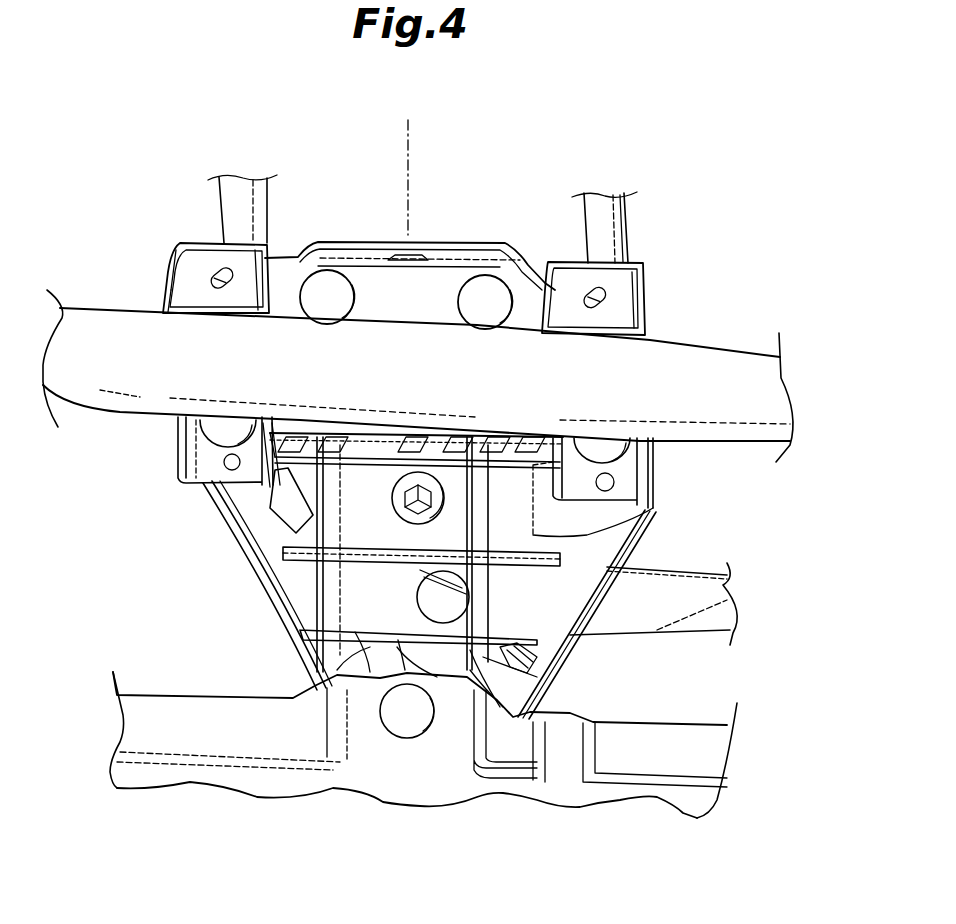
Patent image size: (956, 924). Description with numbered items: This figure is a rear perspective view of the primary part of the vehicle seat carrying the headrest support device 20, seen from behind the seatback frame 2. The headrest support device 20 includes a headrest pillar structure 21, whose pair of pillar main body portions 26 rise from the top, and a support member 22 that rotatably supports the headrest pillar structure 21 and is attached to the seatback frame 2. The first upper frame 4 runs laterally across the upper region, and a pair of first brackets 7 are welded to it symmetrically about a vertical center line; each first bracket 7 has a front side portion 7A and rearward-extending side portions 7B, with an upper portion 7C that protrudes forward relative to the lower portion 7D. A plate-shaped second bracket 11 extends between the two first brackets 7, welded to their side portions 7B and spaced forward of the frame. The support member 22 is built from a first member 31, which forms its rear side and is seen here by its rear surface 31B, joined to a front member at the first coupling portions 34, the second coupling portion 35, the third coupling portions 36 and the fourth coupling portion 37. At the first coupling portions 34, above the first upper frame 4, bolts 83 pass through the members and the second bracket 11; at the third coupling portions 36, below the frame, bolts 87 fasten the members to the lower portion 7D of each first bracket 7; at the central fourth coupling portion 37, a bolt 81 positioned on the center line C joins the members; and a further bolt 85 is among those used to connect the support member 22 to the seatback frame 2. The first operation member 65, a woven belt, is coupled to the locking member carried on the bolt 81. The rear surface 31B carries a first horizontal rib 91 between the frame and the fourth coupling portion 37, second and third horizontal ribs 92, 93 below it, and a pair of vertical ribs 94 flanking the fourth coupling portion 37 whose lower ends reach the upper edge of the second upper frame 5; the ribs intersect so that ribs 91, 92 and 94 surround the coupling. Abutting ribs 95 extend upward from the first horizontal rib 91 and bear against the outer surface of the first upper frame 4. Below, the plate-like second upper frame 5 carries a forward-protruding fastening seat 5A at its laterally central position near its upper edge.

The seatback frame 2 is at (752, 338).
The first upper frame 4 is at (775, 392).
The second upper frame 5 is at (700, 752).
The fastening seat 5A is at (452, 740).
The first bracket 7 is at (176, 239).
The front side portion 7A is at (203, 255).
The side portion 7B is at (166, 287).
The upper portion 7C is at (172, 263).
The lower portion 7D is at (212, 472).
The second bracket 11 is at (428, 282).
The headrest support device 20 is at (160, 580).
The headrest pillar structure 21 is at (632, 205).
The support member 22 is at (260, 604).
The pillar main body portion 26 is at (240, 187).
The first member 31 is at (560, 681).
The rear surface 31B is at (557, 590).
The first coupling portion 34 is at (358, 278).
The second coupling portion 35 is at (368, 722).
The third coupling portion 36 is at (205, 452).
The fourth coupling portion 37 is at (368, 526).
The first operation member 65 is at (745, 603).
The bolt 81 is at (470, 517).
The bolt 83 is at (325, 290).
The bolt 85 is at (408, 727).
The bolt 87 is at (220, 437).
The first horizontal rib 91 is at (540, 490).
The second horizontal rib 92 is at (345, 568).
The third horizontal rib 93 is at (372, 665).
The vertical rib 94 is at (312, 612).
The abutting rib 95 is at (360, 412).
The center line C is at (408, 162).